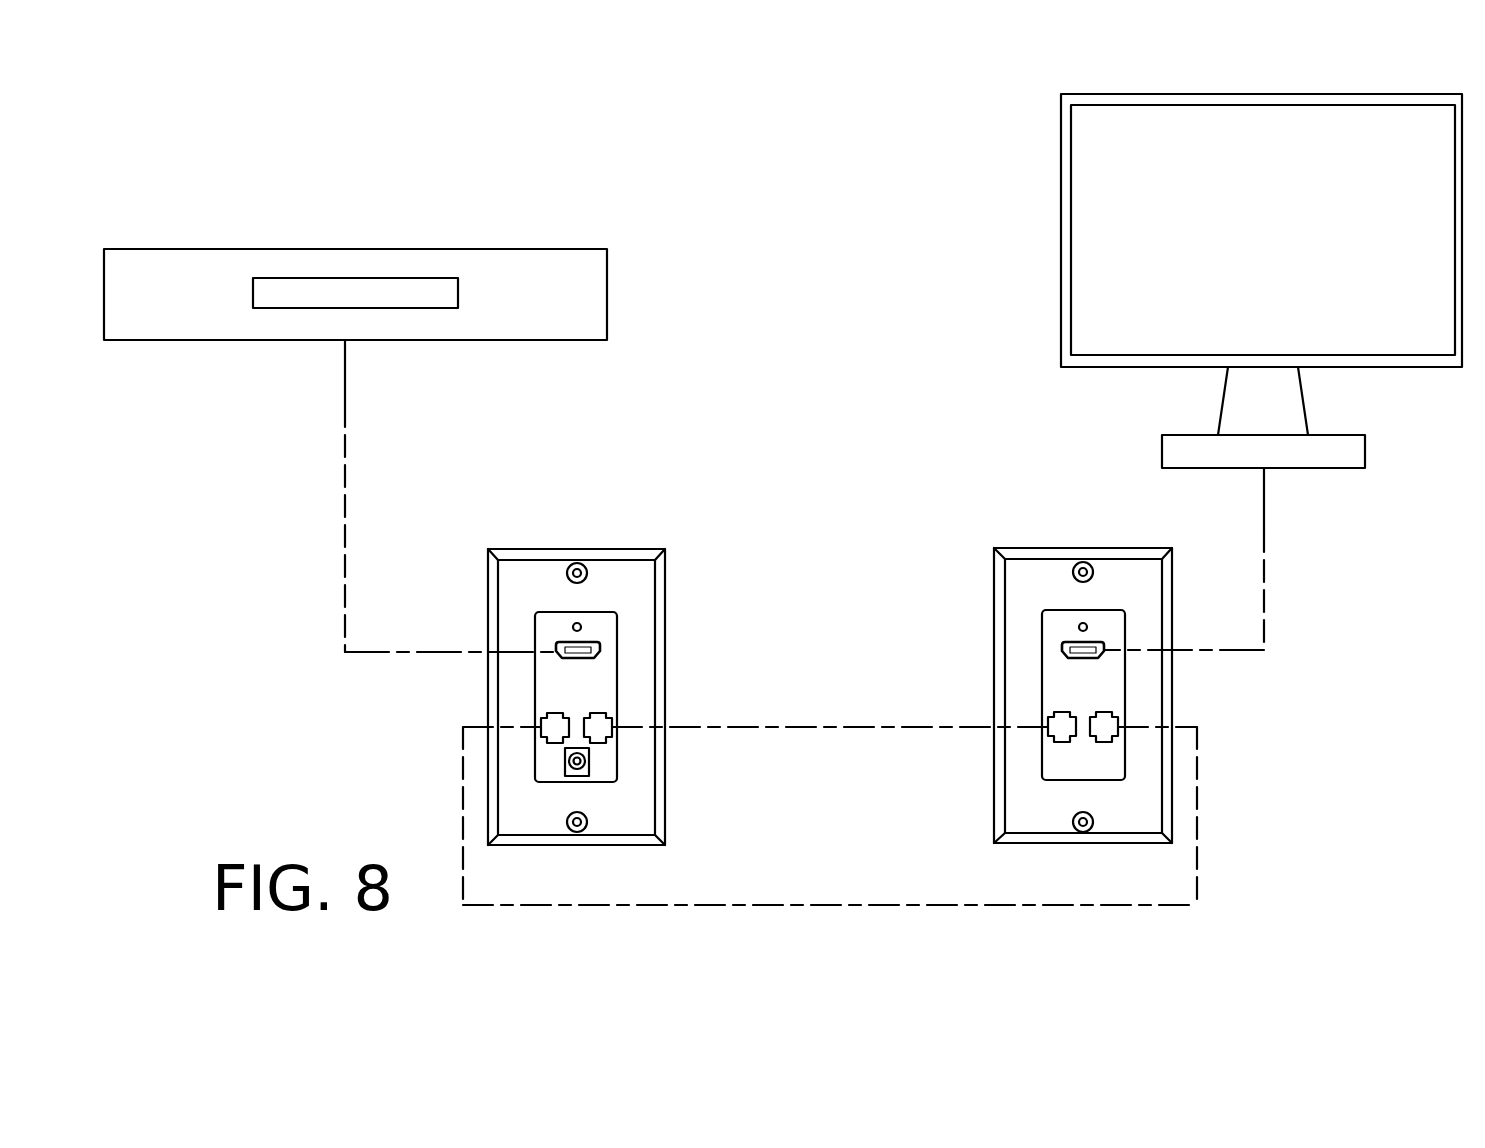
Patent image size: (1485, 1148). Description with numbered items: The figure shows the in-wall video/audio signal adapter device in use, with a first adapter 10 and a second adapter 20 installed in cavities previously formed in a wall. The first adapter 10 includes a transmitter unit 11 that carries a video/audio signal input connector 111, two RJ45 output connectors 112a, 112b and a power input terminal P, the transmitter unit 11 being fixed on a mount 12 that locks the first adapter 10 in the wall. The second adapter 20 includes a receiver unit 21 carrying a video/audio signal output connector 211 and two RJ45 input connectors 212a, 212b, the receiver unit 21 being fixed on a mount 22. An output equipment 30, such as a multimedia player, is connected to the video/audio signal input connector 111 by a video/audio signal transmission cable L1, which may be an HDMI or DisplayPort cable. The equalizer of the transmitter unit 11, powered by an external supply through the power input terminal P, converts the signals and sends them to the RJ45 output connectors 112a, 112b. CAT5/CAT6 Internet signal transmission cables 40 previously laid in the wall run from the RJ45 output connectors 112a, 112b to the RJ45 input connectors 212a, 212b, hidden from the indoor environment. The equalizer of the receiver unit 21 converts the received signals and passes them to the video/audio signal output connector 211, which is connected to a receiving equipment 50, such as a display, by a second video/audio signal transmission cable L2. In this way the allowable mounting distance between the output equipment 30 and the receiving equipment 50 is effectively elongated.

The first adapter 10 is at (634, 545).
The transmitter unit 11 is at (600, 688).
The mount 12 is at (552, 620).
The video/audio signal input connector 111 is at (598, 645).
The RJ45 output connector 112a is at (548, 713).
The RJ45 output connector 112b is at (607, 741).
The power input terminal P is at (581, 763).
The second adapter 20 is at (1034, 541).
The receiver unit 21 is at (1057, 755).
The mount 22 is at (1052, 635).
The video/audio signal output connector 211 is at (1088, 647).
The RJ45 input connector 212a is at (1053, 714).
The RJ45 input connector 212b is at (1116, 714).
The output equipment 30 is at (439, 248).
The CAT5/CAT6 Internet signal transmission cables 40 is at (852, 725).
The receiving equipment 50 is at (1055, 182).
The video/audio signal transmission cable L1 is at (345, 515).
The video/audio signal transmission cable L2 is at (1243, 597).